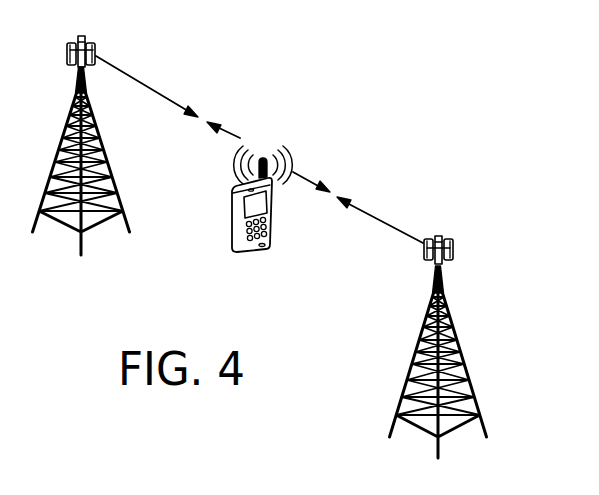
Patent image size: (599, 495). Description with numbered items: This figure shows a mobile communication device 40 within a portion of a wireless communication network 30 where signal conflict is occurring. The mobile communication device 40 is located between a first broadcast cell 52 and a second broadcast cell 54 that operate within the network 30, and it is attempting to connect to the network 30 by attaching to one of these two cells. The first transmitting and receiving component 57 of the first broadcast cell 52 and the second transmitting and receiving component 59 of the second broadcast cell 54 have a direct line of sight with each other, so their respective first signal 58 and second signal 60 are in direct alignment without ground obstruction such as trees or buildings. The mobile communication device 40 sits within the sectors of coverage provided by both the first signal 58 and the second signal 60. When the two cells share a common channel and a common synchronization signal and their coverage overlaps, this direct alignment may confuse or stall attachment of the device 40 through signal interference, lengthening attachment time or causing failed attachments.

The wireless communication network 30 is at (407, 80).
The mobile communication device 40 is at (232, 222).
The first broadcast cell 52 is at (57, 157).
The second broadcast cell 54 is at (417, 349).
The first transmitting and receiving component 57 is at (96, 50).
The first signal 58 is at (155, 90).
The second transmitting and receiving component 59 is at (424, 251).
The second signal 60 is at (383, 220).